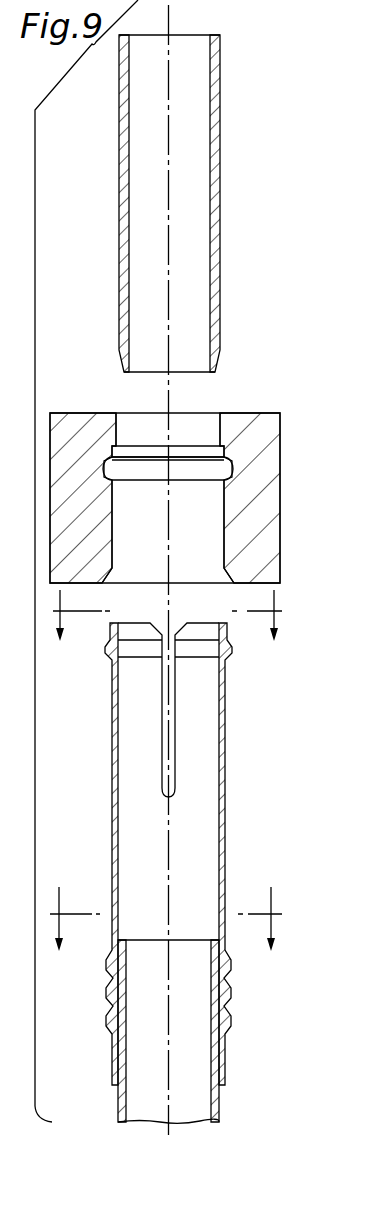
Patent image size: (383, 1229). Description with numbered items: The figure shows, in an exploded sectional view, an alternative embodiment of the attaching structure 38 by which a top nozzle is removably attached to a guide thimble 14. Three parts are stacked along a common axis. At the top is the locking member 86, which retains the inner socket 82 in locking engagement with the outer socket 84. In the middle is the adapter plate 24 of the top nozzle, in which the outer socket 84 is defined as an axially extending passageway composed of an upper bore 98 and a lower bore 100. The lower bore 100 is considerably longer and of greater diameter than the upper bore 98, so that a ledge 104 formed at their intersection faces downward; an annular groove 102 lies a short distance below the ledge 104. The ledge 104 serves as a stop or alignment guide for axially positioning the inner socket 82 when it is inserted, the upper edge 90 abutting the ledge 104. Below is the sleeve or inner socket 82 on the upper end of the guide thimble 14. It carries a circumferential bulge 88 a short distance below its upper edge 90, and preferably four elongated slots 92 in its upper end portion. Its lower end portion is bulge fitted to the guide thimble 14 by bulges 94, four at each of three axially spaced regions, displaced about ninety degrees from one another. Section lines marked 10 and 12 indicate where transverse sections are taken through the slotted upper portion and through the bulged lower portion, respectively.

The section line 10- 10 is at (166, 629).
The section line 12- 12 is at (164, 935).
The guide thimble 14 is at (220, 1099).
The adapter plate 24 is at (281, 463).
The assembly 38 is at (63, 64).
The inner socket 82 is at (176, 852).
The outer socket 84 is at (191, 482).
The locking member 86 is at (108, 168).
The circumferential bulge 88 is at (233, 648).
The upper edge 90 is at (112, 622).
The elongated slots 92 is at (173, 764).
The bulges 94 is at (108, 1033).
The upper bore 98 is at (156, 440).
The lower bore 100 is at (208, 533).
The annular groove 102 is at (218, 487).
The ledge 104 is at (212, 452).